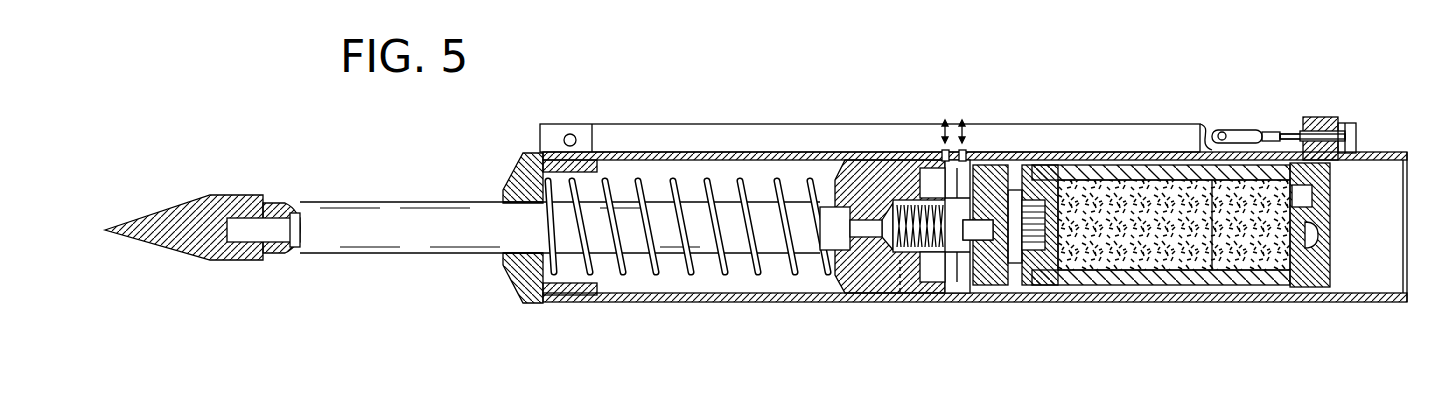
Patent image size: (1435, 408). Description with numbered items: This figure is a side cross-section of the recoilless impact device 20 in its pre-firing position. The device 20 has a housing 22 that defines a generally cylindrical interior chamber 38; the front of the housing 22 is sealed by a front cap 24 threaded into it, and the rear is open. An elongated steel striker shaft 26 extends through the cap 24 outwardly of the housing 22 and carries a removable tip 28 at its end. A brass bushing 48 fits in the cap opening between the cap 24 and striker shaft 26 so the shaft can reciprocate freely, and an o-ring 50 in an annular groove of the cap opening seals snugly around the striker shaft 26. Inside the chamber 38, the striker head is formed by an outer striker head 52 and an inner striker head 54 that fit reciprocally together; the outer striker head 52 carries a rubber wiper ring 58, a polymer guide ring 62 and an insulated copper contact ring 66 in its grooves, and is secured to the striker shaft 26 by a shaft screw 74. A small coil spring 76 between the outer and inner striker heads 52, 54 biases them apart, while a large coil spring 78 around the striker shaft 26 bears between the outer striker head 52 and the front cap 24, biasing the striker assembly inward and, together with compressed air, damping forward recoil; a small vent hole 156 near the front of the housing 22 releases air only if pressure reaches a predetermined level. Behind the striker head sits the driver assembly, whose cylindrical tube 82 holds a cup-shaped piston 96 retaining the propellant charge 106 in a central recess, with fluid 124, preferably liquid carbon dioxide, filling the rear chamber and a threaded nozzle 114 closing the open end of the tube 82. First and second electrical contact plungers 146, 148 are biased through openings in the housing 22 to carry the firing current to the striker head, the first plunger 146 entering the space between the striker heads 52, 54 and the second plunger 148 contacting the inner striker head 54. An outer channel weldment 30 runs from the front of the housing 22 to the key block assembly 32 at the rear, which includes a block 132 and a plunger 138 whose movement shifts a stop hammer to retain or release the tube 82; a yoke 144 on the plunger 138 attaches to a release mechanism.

The impact device 20 is at (1012, 100).
The housing 22 is at (1263, 300).
The front cap 24 is at (513, 175).
The striker shaft 26 is at (357, 245).
The tip 28 is at (165, 212).
The channel weldment 30 is at (1088, 132).
The key block assembly 32 is at (1310, 102).
The interior chamber 38 is at (688, 213).
The brass bushing 48 is at (505, 257).
The o-ring 50 is at (522, 300).
The outer striker head 52 is at (822, 303).
The inner striker head 54 is at (970, 290).
The rubber wiper ring 58 is at (857, 172).
The polymer guide ring 62 is at (905, 200).
The copper contact ring 66 is at (925, 295).
The shaft screw 74 is at (863, 220).
The small coil spring 76 is at (900, 297).
The large coil spring 78 is at (687, 263).
The tube 82 is at (1143, 175).
The piston 96 is at (1043, 273).
The propellant charge 106 is at (1047, 187).
The nozzle 114 is at (1327, 263).
The fluid 124 is at (1133, 253).
The block 132 is at (1322, 118).
The plunger 138 is at (1355, 128).
The yoke 144 is at (1245, 133).
The first electrical contact plunger 146 is at (930, 150).
The second electrical contact plunger 148 is at (963, 150).
The vent hole 156 is at (617, 295).